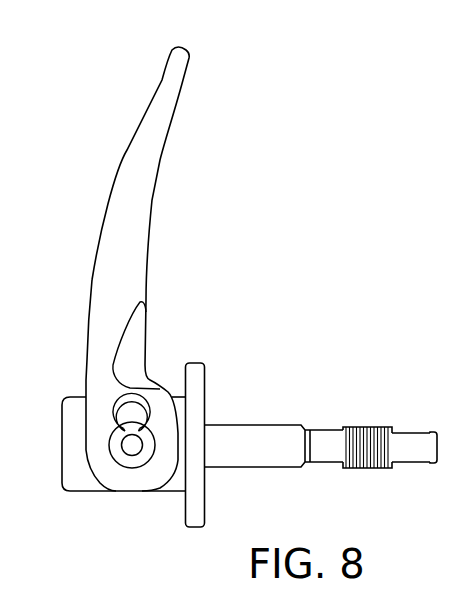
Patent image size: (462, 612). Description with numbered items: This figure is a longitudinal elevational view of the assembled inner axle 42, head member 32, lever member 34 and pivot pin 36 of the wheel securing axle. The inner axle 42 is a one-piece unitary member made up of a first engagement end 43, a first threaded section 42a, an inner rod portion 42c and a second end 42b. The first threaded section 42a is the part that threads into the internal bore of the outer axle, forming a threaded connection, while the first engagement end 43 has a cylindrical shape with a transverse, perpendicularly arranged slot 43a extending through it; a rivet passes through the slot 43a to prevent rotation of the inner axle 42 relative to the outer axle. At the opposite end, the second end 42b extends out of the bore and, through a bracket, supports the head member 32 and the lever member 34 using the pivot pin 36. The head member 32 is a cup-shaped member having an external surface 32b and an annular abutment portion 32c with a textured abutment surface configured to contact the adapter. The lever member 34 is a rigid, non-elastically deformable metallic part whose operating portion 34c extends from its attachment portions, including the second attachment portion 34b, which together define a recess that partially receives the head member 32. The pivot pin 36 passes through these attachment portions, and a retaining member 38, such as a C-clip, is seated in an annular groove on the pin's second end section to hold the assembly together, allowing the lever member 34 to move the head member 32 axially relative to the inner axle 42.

The head member 32 is at (197, 351).
The external surface 32b is at (72, 428).
The annular abutment portion 32c is at (197, 518).
The lever member 34 is at (202, 168).
The second attachment portion 34b is at (133, 483).
The operating portion 34c is at (157, 124).
The pivot pin 36 is at (130, 446).
The retaining member 38 is at (120, 464).
The inner axle 42 is at (270, 399).
The first threaded section 42a is at (370, 440).
The second end 42b is at (224, 438).
The inner rod portion 42c is at (268, 446).
The first engagement end 43 is at (410, 443).
The slot 43a is at (410, 462).